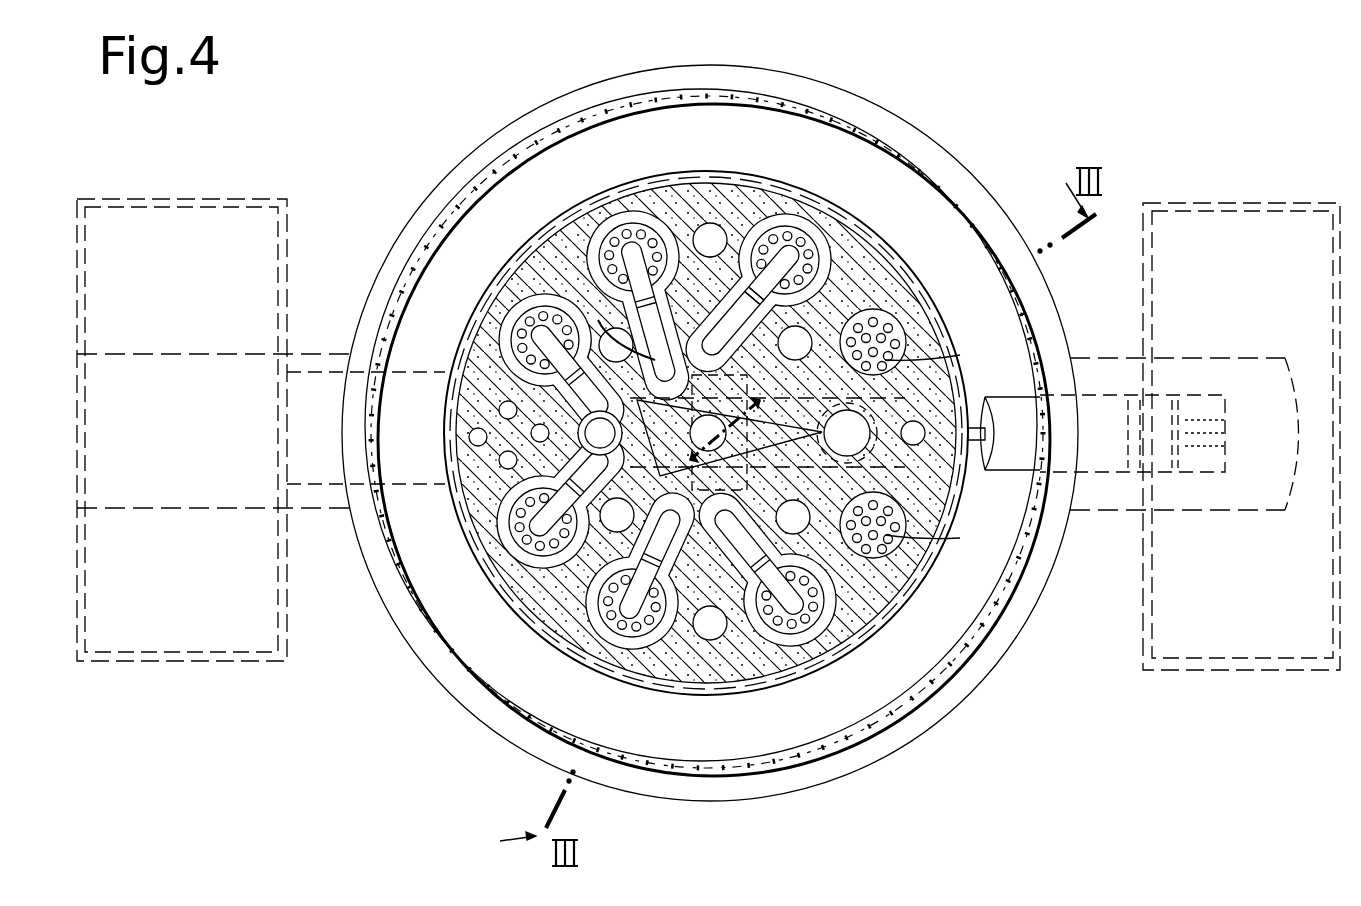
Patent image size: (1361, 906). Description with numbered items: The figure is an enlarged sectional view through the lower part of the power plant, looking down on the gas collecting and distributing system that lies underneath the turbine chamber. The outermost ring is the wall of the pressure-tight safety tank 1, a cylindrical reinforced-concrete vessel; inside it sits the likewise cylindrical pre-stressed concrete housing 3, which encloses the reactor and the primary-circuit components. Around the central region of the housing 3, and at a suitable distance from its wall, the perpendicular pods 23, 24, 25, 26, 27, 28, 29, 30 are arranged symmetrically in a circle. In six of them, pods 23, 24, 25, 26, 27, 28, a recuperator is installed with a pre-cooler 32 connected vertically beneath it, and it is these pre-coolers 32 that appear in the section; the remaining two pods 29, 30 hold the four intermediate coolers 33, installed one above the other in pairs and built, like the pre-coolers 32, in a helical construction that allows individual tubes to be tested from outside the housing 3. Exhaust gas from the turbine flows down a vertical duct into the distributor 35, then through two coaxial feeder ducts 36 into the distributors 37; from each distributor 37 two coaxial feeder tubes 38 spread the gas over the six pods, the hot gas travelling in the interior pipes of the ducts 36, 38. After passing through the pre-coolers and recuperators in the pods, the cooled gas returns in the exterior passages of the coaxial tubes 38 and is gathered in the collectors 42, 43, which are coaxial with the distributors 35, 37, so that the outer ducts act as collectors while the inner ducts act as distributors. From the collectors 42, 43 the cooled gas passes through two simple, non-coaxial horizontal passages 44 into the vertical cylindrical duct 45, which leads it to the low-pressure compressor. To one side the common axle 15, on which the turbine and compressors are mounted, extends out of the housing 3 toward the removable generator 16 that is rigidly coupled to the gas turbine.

The safety tank 1 is at (940, 708).
The pre-stressed concrete housing 3 is at (712, 185).
The common axle 15 is at (1000, 462).
The generator 16 is at (1050, 505).
The pod 23 is at (818, 628).
The pod 24 is at (600, 665).
The pod 25 is at (518, 537).
The pod 26 is at (545, 303).
The pod 27 is at (637, 227).
The pod 28 is at (772, 228).
The pod 29 is at (900, 326).
The pod 30 is at (908, 585).
The pre-cooler 32 is at (790, 700).
The intermediate cooler 33 is at (953, 454).
The distributor 35 is at (476, 443).
The coaxial feeder duct 36 is at (608, 316).
The distributor 37 is at (566, 500).
The coaxial feeder tube 38 is at (560, 400).
The collector 42 is at (497, 452).
The collector 43 is at (735, 436).
The horizontal passage 44 is at (793, 535).
The vertical cylindrical duct 45 is at (898, 512).